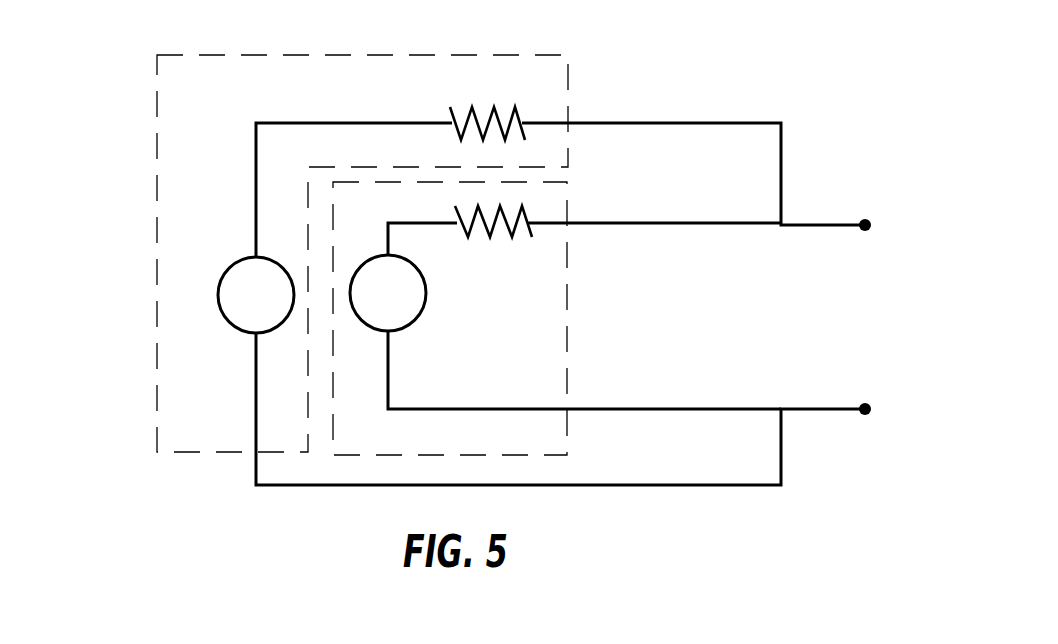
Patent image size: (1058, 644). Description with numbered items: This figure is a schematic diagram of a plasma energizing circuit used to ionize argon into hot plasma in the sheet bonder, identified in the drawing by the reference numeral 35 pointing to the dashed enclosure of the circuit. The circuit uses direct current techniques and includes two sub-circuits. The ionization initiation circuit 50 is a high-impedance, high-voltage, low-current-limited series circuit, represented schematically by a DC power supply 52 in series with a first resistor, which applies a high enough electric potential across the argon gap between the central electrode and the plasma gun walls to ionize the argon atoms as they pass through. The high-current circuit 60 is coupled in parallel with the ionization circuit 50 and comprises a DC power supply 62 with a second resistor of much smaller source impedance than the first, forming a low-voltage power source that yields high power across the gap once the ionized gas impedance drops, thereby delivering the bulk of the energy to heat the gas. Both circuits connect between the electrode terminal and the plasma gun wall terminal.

The sensor circuit 35 is at (138, 57).
The high-current circuit 60 is at (158, 183).
The DC power supply 62 is at (240, 328).
The ionization initiation circuit 50 is at (569, 283).
The DC power supply 52 is at (406, 328).